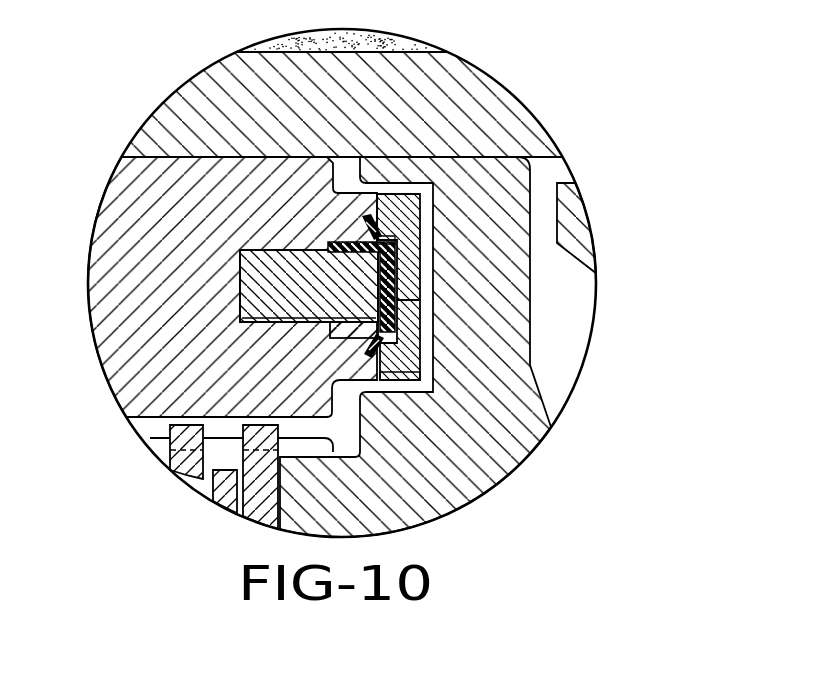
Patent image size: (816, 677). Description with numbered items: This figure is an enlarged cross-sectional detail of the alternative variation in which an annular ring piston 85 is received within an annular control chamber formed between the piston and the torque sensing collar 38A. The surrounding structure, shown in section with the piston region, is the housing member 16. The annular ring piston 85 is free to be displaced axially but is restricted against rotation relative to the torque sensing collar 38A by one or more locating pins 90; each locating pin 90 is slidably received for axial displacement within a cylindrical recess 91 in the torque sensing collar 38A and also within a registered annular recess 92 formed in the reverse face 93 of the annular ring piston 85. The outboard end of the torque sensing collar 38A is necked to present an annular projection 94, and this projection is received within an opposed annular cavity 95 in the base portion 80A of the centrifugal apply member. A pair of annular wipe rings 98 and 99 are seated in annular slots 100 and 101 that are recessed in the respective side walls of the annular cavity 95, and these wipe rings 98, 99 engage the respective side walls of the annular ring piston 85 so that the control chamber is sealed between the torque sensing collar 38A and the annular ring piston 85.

The housing 16 is at (524, 99).
The torque sensing collar 38A is at (122, 243).
The base portion of the centrifugal apply member 80A is at (493, 170).
The annular ring piston 85 is at (412, 251).
The locating pin 90 is at (277, 280).
The cylindrical recess 91 is at (292, 320).
The annular recess 92 is at (352, 316).
The reverse face of the annular ring piston 93 is at (360, 323).
The annular projection 94 is at (404, 217).
The annular cavity 95 is at (385, 387).
The annular wipe ring 98 is at (386, 338).
The annular wipe ring 99 is at (381, 228).
The annular slot 100 is at (392, 378).
The annular slot 101 is at (370, 226).